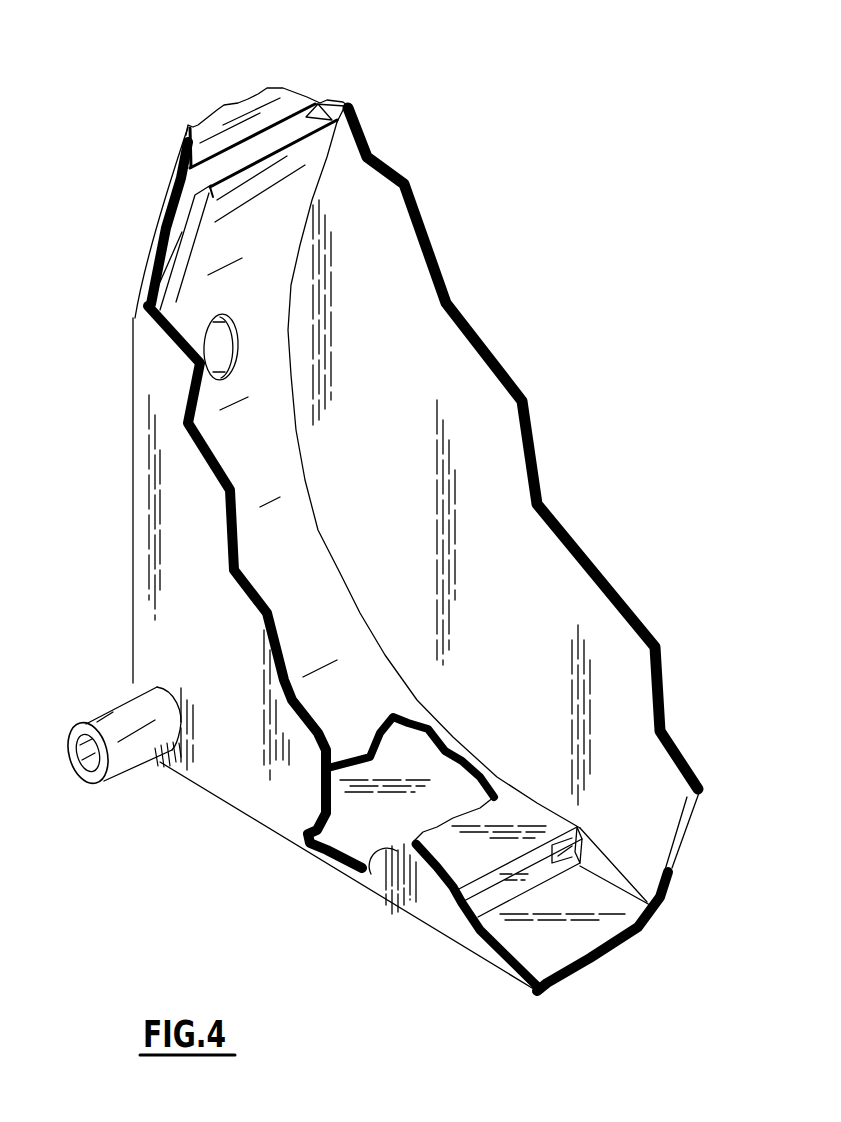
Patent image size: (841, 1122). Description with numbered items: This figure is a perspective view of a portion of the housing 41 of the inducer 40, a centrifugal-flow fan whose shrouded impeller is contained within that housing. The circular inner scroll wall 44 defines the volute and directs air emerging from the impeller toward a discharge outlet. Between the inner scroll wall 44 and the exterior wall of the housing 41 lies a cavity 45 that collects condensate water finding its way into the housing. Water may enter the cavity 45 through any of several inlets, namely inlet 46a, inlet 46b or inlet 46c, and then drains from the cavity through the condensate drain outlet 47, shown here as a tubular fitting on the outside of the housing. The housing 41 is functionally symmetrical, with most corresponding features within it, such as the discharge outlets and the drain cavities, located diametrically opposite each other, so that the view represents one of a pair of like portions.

The inducer 40 is at (488, 152).
The housing 41 is at (132, 452).
The circular inner scroll wall 44 is at (307, 510).
The cavity 45 is at (418, 827).
The inlet 46a is at (320, 105).
The inlet 46b is at (233, 316).
The inlet 46c is at (574, 852).
The condensate drain outlet 47 is at (92, 720).